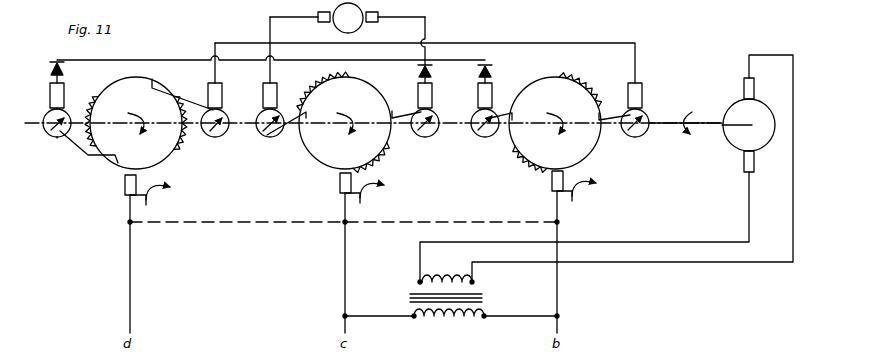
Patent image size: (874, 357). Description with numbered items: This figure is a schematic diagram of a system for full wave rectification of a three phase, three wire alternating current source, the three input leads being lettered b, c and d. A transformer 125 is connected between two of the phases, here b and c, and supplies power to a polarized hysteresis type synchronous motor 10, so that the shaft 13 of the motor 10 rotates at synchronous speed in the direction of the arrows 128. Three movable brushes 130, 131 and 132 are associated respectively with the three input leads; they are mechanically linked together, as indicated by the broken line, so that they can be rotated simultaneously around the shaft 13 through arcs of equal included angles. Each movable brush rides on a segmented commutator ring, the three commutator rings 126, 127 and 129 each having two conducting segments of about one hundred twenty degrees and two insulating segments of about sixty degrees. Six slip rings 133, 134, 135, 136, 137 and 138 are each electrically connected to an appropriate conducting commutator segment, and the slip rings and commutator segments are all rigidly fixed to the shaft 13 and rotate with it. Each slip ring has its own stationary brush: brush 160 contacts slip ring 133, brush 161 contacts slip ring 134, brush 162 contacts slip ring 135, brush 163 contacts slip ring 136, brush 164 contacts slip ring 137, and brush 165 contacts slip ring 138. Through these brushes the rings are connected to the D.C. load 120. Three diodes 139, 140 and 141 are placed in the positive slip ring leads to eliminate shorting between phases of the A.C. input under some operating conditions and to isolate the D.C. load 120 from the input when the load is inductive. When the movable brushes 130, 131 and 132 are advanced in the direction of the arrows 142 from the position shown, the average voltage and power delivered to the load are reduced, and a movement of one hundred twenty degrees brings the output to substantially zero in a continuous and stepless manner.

The polarized hysteresis type synchronous motor 10 is at (740, 110).
The shaft 13 is at (666, 121).
The D.C. load 120 is at (332, 12).
The transformer 125 is at (485, 301).
The segmented commutator ring 126 is at (548, 77).
The segmented commutator ring 127 is at (369, 73).
The arrows indicating direction of rotation 128 is at (134, 116).
The segmented commutator ring 129 is at (132, 74).
The movable brush 130 is at (552, 181).
The movable brush 131 is at (340, 182).
The movable brush 132 is at (125, 183).
The slip ring 133 is at (637, 137).
The slip ring 134 is at (485, 137).
The slip ring 135 is at (426, 137).
The slip ring 136 is at (262, 136).
The slip ring 137 is at (217, 138).
The slip ring 138 is at (46, 134).
The diode 139 is at (491, 67).
The diode 140 is at (432, 71).
The diode 141 is at (56, 68).
The arrows indicating brush advance direction 142 is at (158, 184).
The brush 160 is at (642, 92).
The brush 161 is at (492, 90).
The brush 162 is at (432, 98).
The brush 163 is at (263, 90).
The brush 164 is at (208, 90).
The brush 165 is at (50, 92).